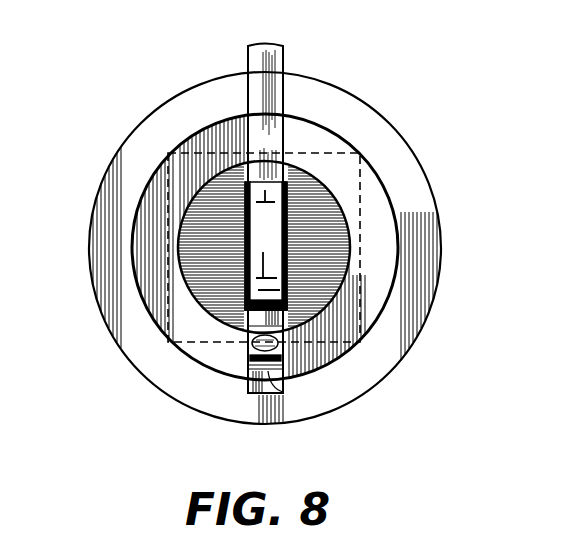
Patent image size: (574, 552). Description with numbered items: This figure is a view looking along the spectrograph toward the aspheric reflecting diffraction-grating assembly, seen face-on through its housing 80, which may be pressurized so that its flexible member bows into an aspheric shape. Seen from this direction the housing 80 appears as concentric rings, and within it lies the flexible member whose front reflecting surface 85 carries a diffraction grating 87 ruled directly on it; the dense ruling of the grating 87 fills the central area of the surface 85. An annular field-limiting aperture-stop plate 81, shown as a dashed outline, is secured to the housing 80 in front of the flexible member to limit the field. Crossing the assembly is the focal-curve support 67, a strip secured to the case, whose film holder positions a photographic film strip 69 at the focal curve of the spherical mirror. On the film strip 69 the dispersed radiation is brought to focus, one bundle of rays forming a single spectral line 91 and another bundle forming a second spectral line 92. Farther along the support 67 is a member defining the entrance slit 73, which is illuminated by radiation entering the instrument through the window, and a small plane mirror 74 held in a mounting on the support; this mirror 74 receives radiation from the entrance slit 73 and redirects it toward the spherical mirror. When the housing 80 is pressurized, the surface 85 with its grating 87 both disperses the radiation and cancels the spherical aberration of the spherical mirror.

The focal-curve support 67 is at (258, 52).
The photographic film strip 69 is at (282, 249).
The entrance slit 73 is at (286, 385).
The small plane mirror 74 is at (252, 346).
The housing 80 is at (378, 140).
The annular field-limiting aperture-stop plate 81 is at (318, 152).
The front reflecting surface 85 is at (185, 222).
The diffraction grating 87 is at (205, 300).
The spectral line 91 is at (263, 255).
The second spectral line 92 is at (265, 190).